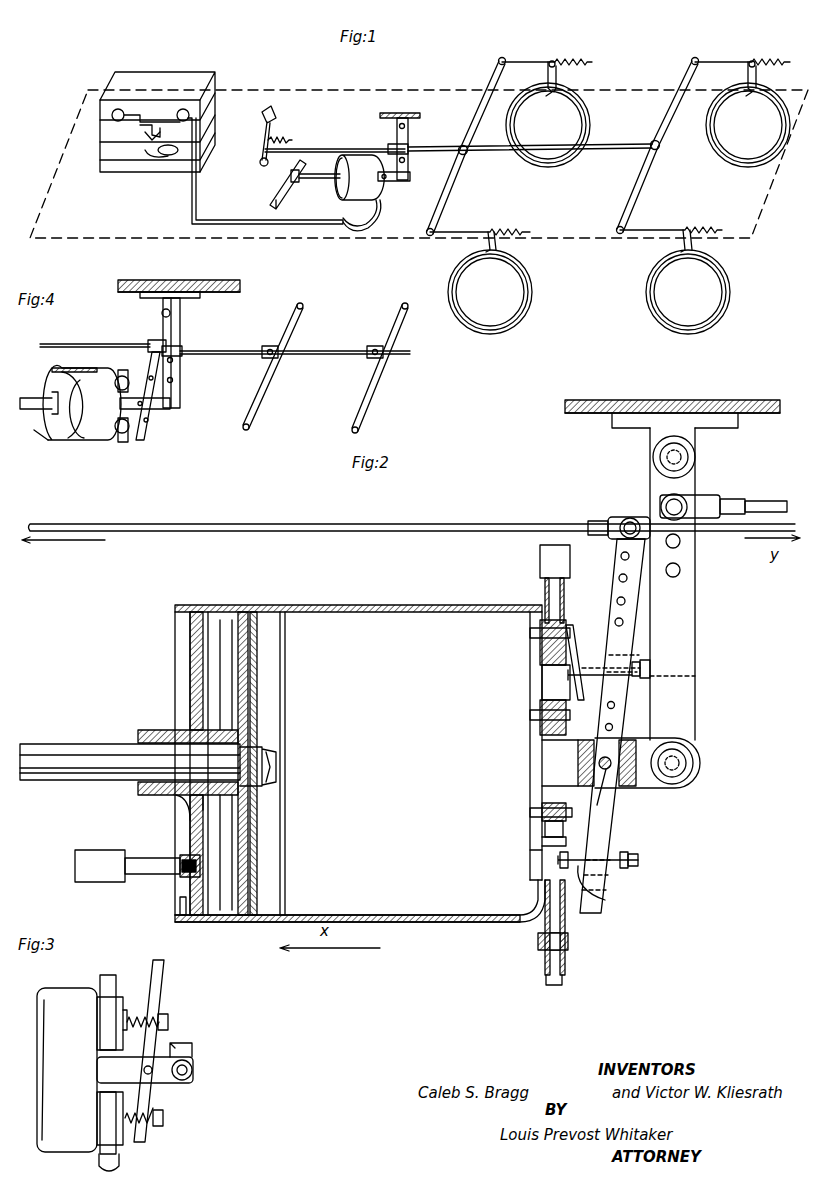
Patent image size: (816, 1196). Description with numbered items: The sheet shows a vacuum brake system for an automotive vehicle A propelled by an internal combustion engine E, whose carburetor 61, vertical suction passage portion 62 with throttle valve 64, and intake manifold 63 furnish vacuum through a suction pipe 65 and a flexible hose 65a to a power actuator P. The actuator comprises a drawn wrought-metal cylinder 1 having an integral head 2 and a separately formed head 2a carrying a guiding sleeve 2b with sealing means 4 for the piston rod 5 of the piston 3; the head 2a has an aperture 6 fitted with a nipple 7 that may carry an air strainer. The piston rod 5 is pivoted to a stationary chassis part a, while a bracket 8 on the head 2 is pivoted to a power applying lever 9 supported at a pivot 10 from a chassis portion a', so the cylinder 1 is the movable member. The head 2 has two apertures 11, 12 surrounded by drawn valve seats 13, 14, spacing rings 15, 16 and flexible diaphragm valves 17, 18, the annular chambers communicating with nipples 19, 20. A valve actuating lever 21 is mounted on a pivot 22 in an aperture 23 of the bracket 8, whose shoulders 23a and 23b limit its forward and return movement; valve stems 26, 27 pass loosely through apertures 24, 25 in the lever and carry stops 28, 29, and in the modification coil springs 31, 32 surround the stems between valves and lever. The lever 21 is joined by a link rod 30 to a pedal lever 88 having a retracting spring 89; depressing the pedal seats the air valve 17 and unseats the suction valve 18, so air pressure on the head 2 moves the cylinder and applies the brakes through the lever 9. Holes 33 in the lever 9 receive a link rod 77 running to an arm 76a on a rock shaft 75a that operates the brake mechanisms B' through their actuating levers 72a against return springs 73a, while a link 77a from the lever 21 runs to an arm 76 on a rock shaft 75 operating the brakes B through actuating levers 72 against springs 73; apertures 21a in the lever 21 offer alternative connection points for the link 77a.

In FIG. 4, the cylinder 1 is at (78, 368).
In FIG. 2, the cylinder 1 is at (392, 607).
In FIG. 3, the cylinder 1 is at (56, 1004).
In FIG. 2, the integral head 2 is at (540, 786).
In FIG. 2, the separately formed head 2a is at (196, 684).
In FIG. 2, the guiding sleeve 2b is at (150, 796).
In FIG. 1, the piston 3 is at (341, 166).
In FIG. 4, the piston 3 is at (56, 394).
In FIG. 2, the piston 3 is at (250, 700).
In FIG. 2, the sealing means 4 is at (190, 800).
In FIG. 1, the piston rod 5 is at (326, 179).
In FIG. 4, the piston rod 5 is at (32, 398).
In FIG. 2, the piston rod 5 is at (58, 752).
In FIG. 1, the aperture 6 is at (296, 182).
In FIG. 2, the aperture 6 is at (178, 900).
In FIG. 2, the tube or nipple 7 is at (100, 842).
In FIG. 1, the bracket 8 is at (405, 182).
In FIG. 4, the bracket 8 is at (160, 410).
In FIG. 2, the bracket 8 is at (672, 786).
In FIG. 3, the bracket 8 is at (168, 1080).
In FIG. 1, the power applying lever 9 is at (409, 140).
In FIG. 4, the power applying lever 9 is at (182, 328).
In FIG. 2, the power applying lever 9 is at (690, 590).
In FIG. 3, the power applying lever 9 is at (185, 1046).
In FIG. 4, the pivotal support 10 is at (161, 313).
In FIG. 2, the pivotal support 10 is at (683, 455).
In FIG. 2, the aperture 11 is at (538, 680).
In FIG. 2, the aperture 12 is at (535, 864).
In FIG. 2, the valve seat 13 is at (540, 652).
In FIG. 2, the valve seat 14 is at (540, 842).
In FIG. 2, the spacing ring 15 is at (540, 728).
In FIG. 2, the spacing ring 16 is at (540, 800).
In FIG. 4, the diaphragm valve 17 is at (121, 376).
In FIG. 2, the diaphragm valve 17 is at (576, 660).
In FIG. 3, the diaphragm valve 17 is at (122, 1000).
In FIG. 4, the diaphragm valve 18 is at (130, 440).
In FIG. 2, the diaphragm valve 18 is at (568, 826).
In FIG. 3, the diaphragm valve 18 is at (124, 1144).
In FIG. 2, the pipe or nipple 19 is at (530, 550).
In FIG. 2, the pipe or nipple 20 is at (545, 934).
In FIG. 4, the valve actuating lever 21 is at (150, 348).
In FIG. 2, the valve actuating lever 21 is at (619, 556).
In FIG. 3, the valve actuating lever 21 is at (164, 972).
In FIG. 2, the apertures 21a is at (615, 622).
In FIG. 2, the pivot 22 is at (600, 778).
In FIG. 2, the aperture 23 is at (604, 756).
In FIG. 2, the arresting shoulders 23a is at (636, 786).
In FIG. 2, the oppositely disposed shoulders 23b is at (628, 742).
In FIG. 2, the aperture 24 is at (612, 880).
In FIG. 2, the aperture 25 is at (628, 668).
In FIG. 2, the valve stem 26 is at (606, 900).
In FIG. 3, the valve stem 26 is at (168, 1022).
In FIG. 2, the valve stem 27 is at (590, 675).
In FIG. 3, the valve stem 27 is at (163, 1118).
In FIG. 2, the stop 28 is at (640, 860).
In FIG. 2, the stop 29 is at (645, 668).
In FIG. 1, the link rod 30 is at (318, 149).
In FIG. 4, the link rod 30 is at (95, 344).
In FIG. 2, the link rod 30 is at (276, 524).
In FIG. 3, the coil spring 31 is at (150, 1125).
In FIG. 3, the coil spring 32 is at (150, 1016).
In FIG. 2, the holes 33 is at (680, 541).
In FIG. 1, the carburetor 61 is at (172, 156).
In FIG. 1, the vertical portion of suction passage 62 is at (150, 138).
In FIG. 1, the intake manifold 63 is at (118, 114).
In FIG. 1, the throttle valve 64 is at (140, 127).
In FIG. 1, the suction pipe 65 is at (194, 196).
In FIG. 1, the flexible hose 65a is at (378, 224).
In FIG. 2, the flexible hose 65a is at (546, 978).
In FIG. 1, the actuating levers 72 is at (549, 72).
In FIG. 1, the brake band link 72a is at (745, 74).
In FIG. 1, the springs 73 is at (570, 62).
In FIG. 1, the springs 73a is at (770, 63).
In FIG. 1, the rock shaft 75 is at (480, 116).
In FIG. 4, the rock shaft 75 is at (266, 392).
In FIG. 1, the rock shaft 75a is at (676, 116).
In FIG. 4, the rock shaft 75a is at (358, 402).
In FIG. 1, the arm 76 is at (458, 160).
In FIG. 4, the arm 76 is at (265, 358).
In FIG. 1, the arm 76a is at (657, 150).
In FIG. 4, the arm 76a is at (372, 358).
In FIG. 1, the link rod 77 is at (608, 150).
In FIG. 4, the link rod 77 is at (222, 351).
In FIG. 2, the link rod 77 is at (760, 503).
In FIG. 1, the link 77a is at (392, 146).
In FIG. 1, the pedal lever 88 is at (262, 152).
In FIG. 1, the retracting spring 89 is at (272, 140).
In FIG. 1, the automotive vehicle A is at (342, 90).
In FIG. 1, the brake mechanisms B is at (519, 208).
In FIG. 1, the brake mechanisms B' is at (718, 208).
In FIG. 1, the internal combustion engine E is at (173, 78).
In FIG. 1, the power actuator P is at (364, 190).
In FIG. 4, the power actuator P is at (86, 430).
In FIG. 2, the power actuator P is at (360, 745).
In FIG. 3, the power actuator P is at (68, 1140).
In FIG. 1, the stationary part of chassis a is at (278, 185).
In FIG. 1, the portion of chassis a' is at (404, 105).
In FIG. 2, the portion of chassis a' is at (672, 397).